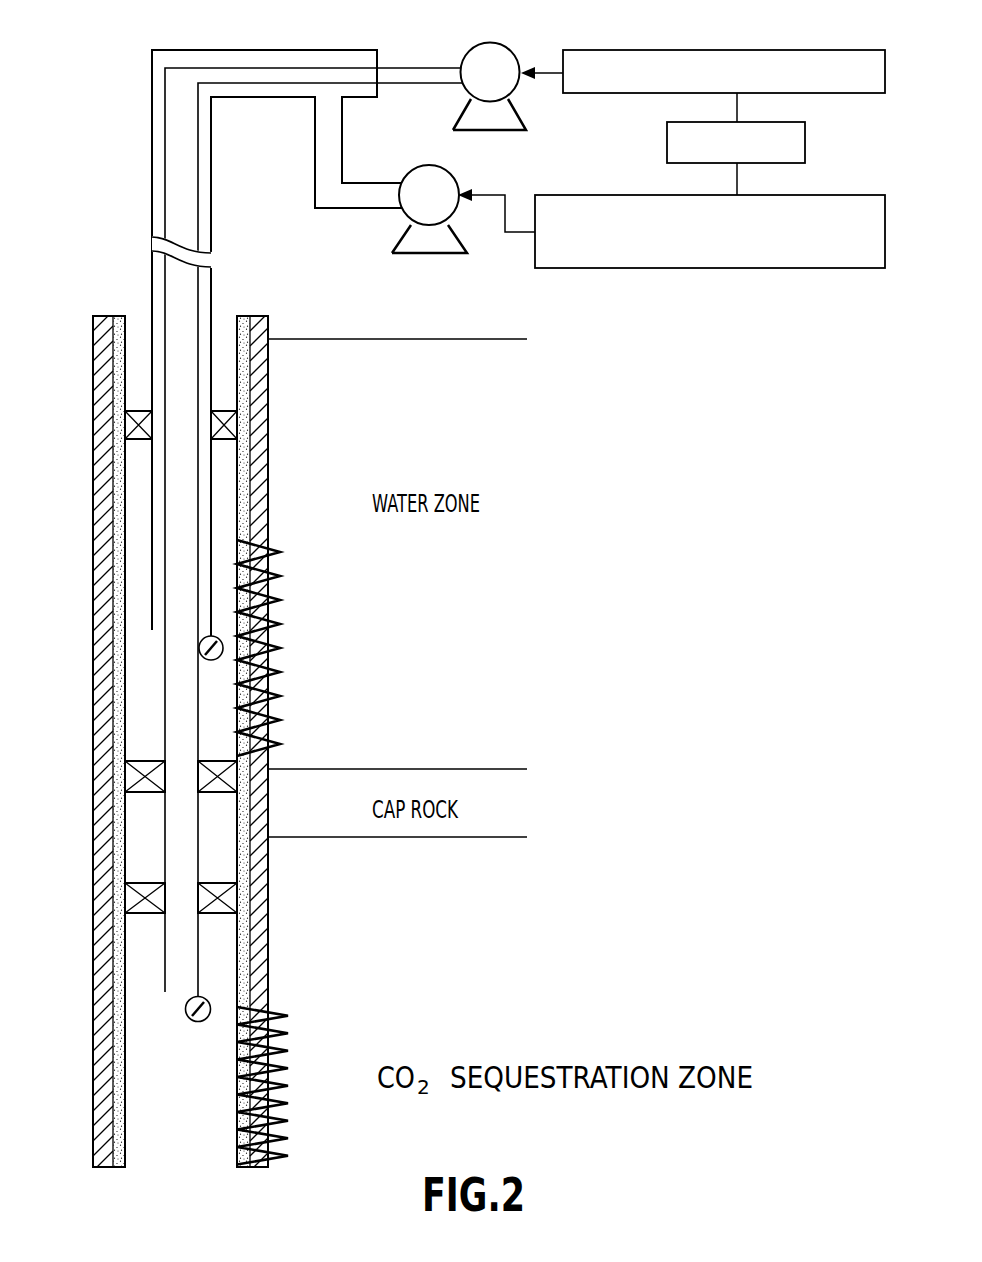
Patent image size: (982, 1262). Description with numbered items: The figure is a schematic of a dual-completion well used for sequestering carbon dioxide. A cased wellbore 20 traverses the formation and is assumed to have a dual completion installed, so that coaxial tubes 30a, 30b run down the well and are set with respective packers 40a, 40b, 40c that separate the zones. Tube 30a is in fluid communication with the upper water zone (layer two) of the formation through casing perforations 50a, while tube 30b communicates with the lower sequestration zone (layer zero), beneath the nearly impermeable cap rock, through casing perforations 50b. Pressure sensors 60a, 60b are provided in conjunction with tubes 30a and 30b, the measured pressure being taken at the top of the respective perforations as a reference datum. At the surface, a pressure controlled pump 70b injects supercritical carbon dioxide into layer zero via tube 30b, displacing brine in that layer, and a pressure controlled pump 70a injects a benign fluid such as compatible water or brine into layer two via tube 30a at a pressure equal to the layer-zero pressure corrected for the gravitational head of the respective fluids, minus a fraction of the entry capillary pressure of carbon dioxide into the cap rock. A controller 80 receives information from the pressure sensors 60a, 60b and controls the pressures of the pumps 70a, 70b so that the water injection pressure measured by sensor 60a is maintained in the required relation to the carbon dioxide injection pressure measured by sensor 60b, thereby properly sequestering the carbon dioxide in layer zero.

The cased wellbore 20 is at (250, 388).
The tube 30a is at (212, 488).
The tube 30b is at (163, 950).
The packer 40a is at (127, 422).
The packer 40b is at (120, 900).
The packer 40c is at (120, 778).
The casing perforations 50a is at (277, 600).
The casing perforations 50b is at (283, 1048).
The pressure sensor 60a is at (223, 652).
The pressure sensor 60b is at (210, 1006).
The pressure controlled pump 70a is at (458, 182).
The pressure controlled pump 70b is at (513, 95).
The controller 80 is at (805, 138).